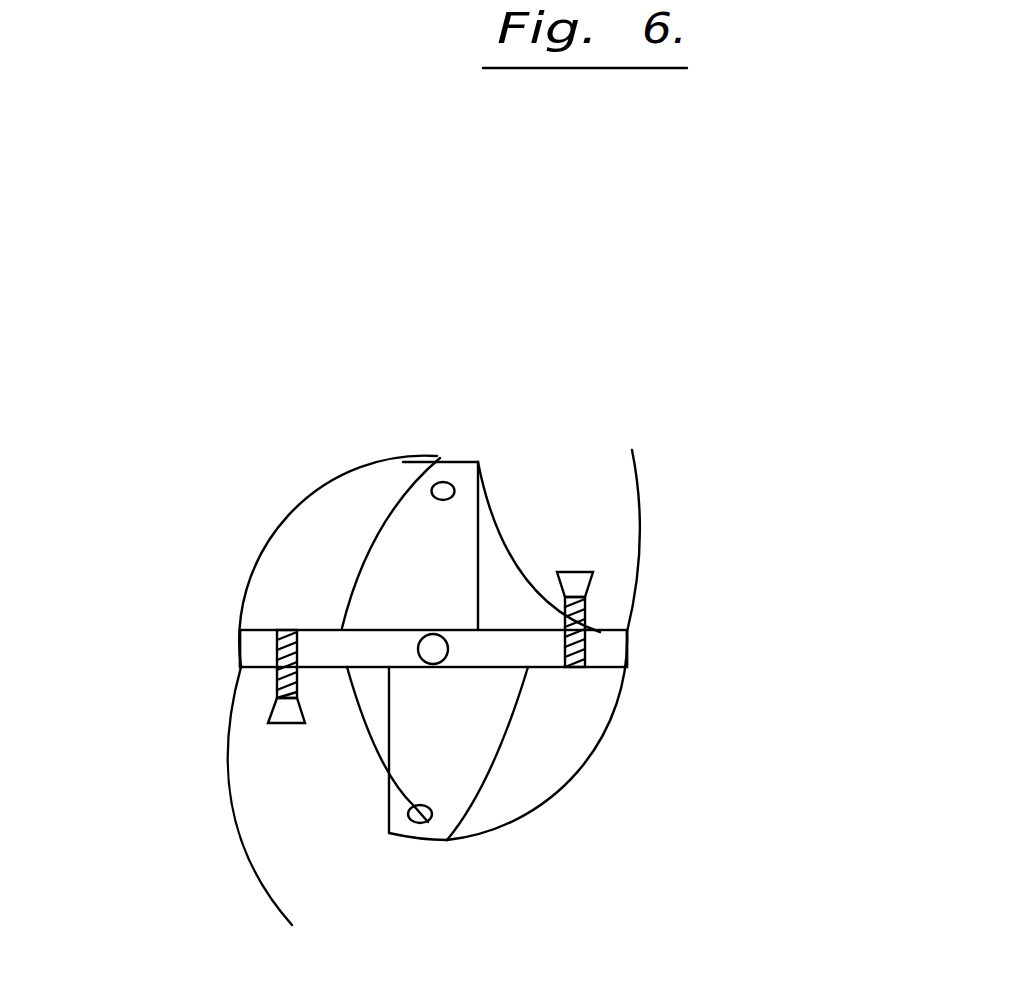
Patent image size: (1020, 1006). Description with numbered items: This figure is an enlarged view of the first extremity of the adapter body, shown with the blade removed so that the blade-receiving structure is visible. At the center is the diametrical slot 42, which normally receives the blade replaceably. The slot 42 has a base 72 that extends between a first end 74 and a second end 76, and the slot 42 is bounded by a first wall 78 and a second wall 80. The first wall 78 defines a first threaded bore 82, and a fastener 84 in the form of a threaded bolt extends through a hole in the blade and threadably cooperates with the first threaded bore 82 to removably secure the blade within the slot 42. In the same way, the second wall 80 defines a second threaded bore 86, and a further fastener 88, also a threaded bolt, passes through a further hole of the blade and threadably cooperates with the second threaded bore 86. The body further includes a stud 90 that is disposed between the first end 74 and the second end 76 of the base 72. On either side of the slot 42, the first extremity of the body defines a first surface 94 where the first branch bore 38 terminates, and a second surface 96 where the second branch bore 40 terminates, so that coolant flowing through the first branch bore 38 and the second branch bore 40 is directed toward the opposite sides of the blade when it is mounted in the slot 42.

The first branch bore 38 is at (432, 807).
The second branch bore 40 is at (446, 482).
The diametrical slot 42 is at (602, 665).
The base 72 is at (255, 642).
The first end 74 is at (279, 818).
The second end 76 is at (632, 450).
The first wall 78 is at (428, 822).
The second wall 80 is at (322, 627).
The first threaded bore 82 is at (580, 668).
The fastener 84 is at (577, 585).
The second threaded bore 86 is at (278, 627).
The further fastener 88 is at (287, 708).
The stud 90 is at (433, 648).
The first surface 94 is at (455, 808).
The second surface 96 is at (322, 510).